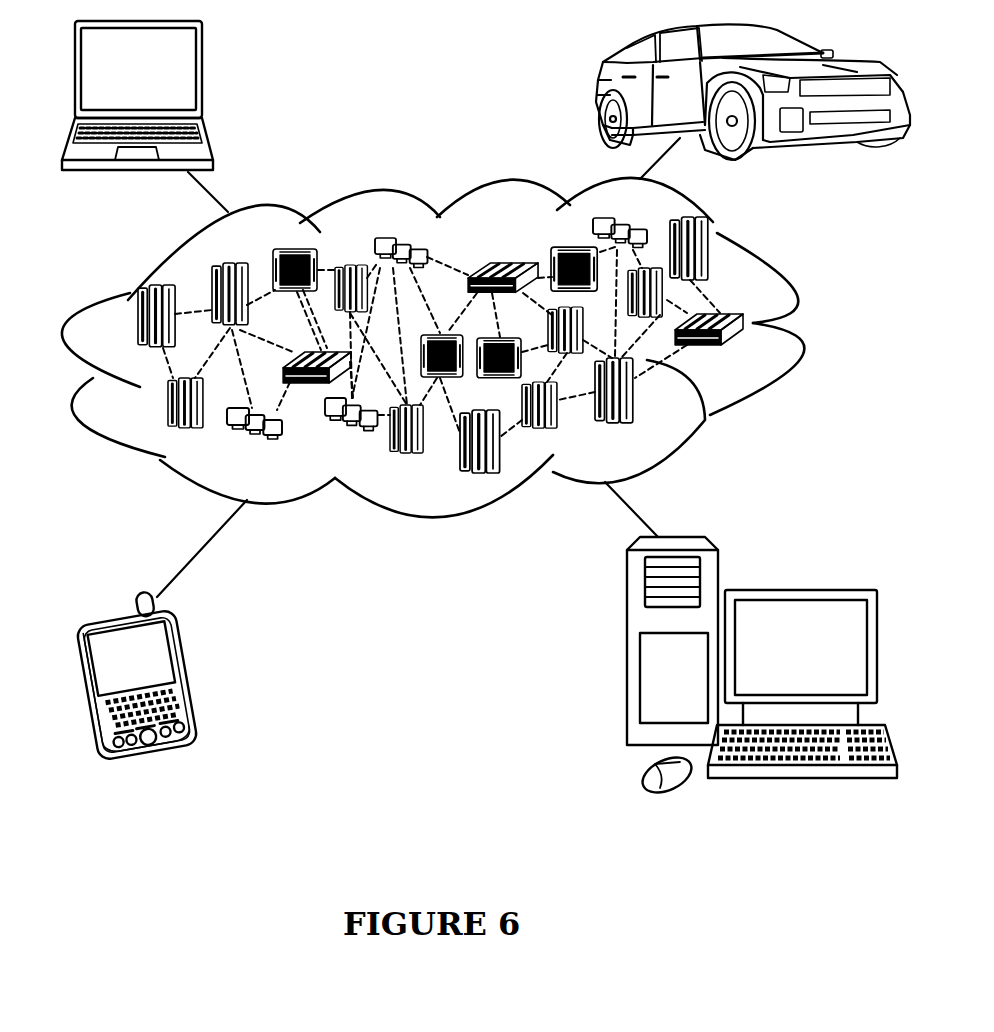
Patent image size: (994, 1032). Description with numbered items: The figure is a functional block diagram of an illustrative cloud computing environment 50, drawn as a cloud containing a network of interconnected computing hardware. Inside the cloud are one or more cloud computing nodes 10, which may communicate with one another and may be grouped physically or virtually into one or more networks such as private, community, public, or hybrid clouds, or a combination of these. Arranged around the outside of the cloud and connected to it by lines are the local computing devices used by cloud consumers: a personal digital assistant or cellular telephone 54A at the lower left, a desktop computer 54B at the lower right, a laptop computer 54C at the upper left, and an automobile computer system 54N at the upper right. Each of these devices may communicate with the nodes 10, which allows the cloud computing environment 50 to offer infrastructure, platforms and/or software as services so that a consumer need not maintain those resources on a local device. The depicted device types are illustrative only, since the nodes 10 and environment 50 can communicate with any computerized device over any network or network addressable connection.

The cloud computing nodes 10 is at (745, 352).
The cloud computing environment 50 is at (798, 322).
The personal digital assistant or cellular telephone 54A is at (193, 675).
The desktop computer 54B is at (799, 591).
The laptop computer 54C is at (202, 78).
The automobile computer system 54N is at (602, 92).